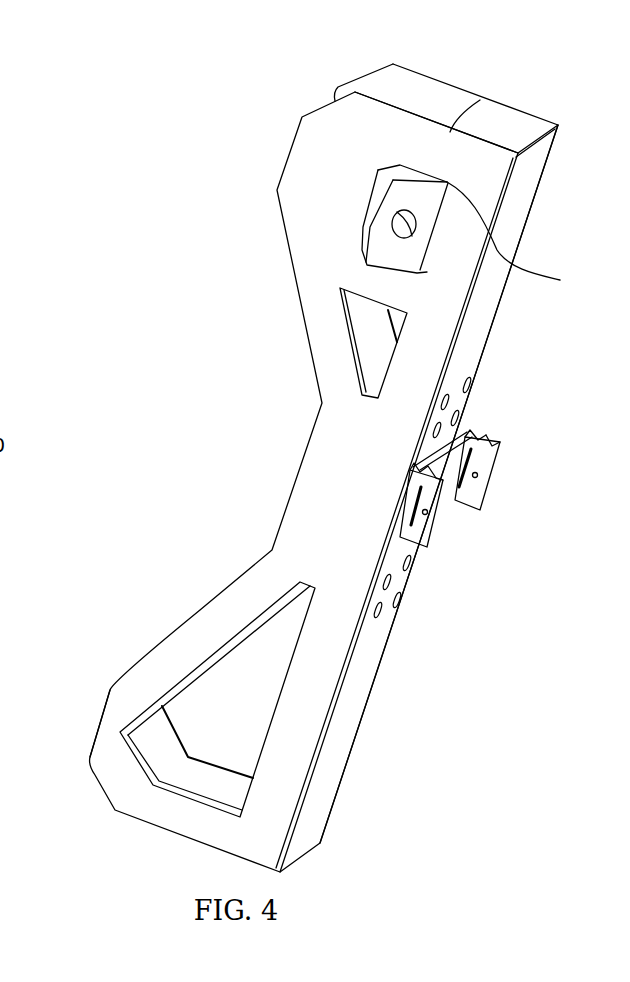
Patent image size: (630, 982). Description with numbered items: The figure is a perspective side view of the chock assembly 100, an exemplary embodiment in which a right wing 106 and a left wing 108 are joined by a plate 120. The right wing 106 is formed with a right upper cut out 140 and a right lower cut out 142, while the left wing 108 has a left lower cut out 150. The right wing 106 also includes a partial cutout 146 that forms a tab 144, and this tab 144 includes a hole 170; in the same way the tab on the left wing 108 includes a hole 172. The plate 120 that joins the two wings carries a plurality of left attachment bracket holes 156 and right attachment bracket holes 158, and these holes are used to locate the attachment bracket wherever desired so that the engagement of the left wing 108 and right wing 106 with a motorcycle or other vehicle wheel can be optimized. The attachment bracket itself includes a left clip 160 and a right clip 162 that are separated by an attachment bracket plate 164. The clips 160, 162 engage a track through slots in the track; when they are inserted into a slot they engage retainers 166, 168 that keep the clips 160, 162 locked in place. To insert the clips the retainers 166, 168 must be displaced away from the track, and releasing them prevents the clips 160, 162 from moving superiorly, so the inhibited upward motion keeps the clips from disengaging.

The chock assembly 100 is at (236, 457).
The right wing 106 is at (490, 102).
The left wing 108 is at (452, 88).
The plate 120 is at (548, 181).
The right upper cut out 140 is at (365, 330).
The right lower cut out 142 is at (140, 758).
The tab 144 is at (403, 258).
The partial cutout 146 is at (417, 218).
The left lower cut out 150 is at (195, 718).
The left attachment bracket holes 156 is at (470, 386).
The right attachment bracket holes 158 is at (443, 402).
The left clip 160 is at (492, 487).
The right clip 162 is at (437, 517).
The attachment bracket plate 164 is at (486, 440).
The retainer 166 is at (413, 467).
The retainer 168 is at (496, 440).
The hole 170 is at (560, 280).
The hole 172 is at (475, 522).